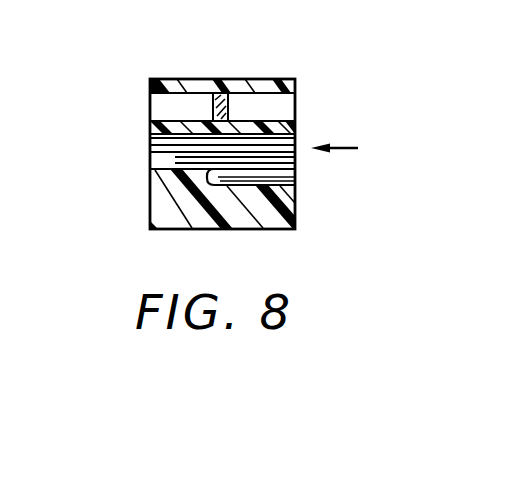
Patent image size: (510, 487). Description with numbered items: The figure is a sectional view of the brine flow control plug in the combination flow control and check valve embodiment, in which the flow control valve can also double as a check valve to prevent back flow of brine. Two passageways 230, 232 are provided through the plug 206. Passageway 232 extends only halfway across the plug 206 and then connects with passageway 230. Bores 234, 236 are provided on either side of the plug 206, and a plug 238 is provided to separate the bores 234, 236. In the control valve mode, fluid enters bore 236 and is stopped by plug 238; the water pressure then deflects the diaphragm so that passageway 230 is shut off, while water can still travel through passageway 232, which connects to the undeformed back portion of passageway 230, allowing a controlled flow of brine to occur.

The plug 206 is at (168, 207).
The passageway 230 is at (170, 154).
The passageway 232 is at (285, 178).
The bore 234 is at (168, 105).
The bore 236 is at (280, 117).
The plug 238 is at (227, 93).